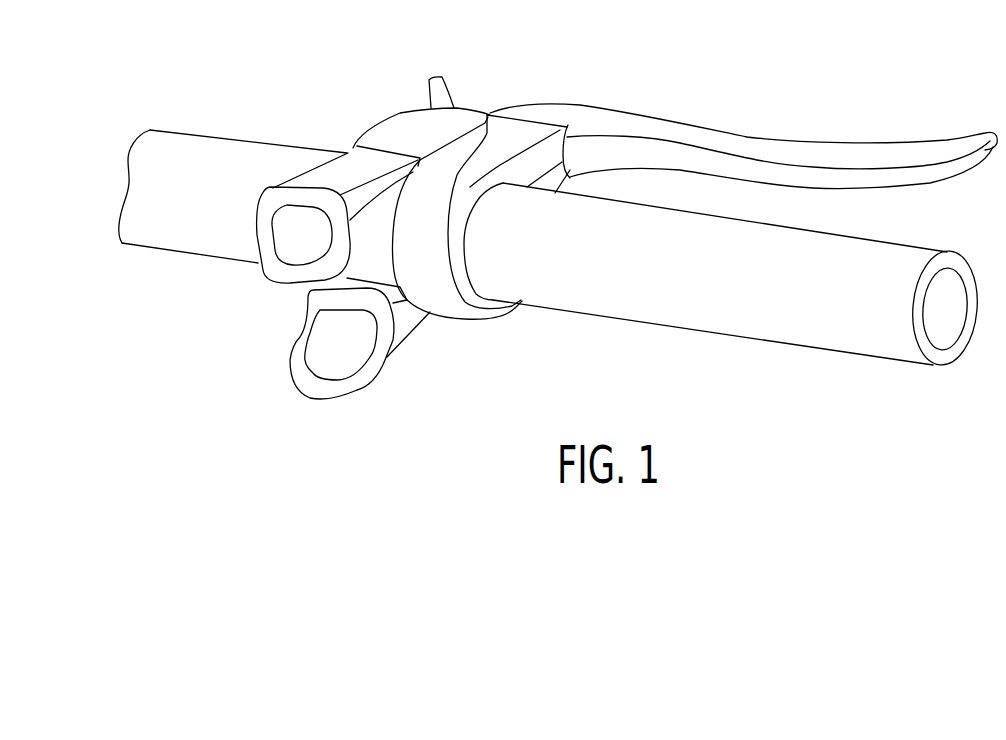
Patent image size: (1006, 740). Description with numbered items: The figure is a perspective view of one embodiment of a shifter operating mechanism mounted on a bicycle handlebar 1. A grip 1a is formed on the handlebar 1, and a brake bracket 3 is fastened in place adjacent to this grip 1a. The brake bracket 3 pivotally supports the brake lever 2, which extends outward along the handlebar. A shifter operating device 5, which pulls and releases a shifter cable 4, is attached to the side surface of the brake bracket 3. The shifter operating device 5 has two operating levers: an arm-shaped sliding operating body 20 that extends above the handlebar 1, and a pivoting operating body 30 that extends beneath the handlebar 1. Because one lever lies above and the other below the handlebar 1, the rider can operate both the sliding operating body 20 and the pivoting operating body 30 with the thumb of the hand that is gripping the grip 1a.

The handlebar 1 is at (158, 237).
The grip 1a is at (835, 335).
The brake lever 2 is at (877, 160).
The brake bracket 3 is at (517, 133).
The shifter cable 4 is at (435, 78).
The shifter operating device 5 is at (356, 126).
The sliding operating body 20 is at (260, 282).
The pivoting operating body 30 is at (381, 385).